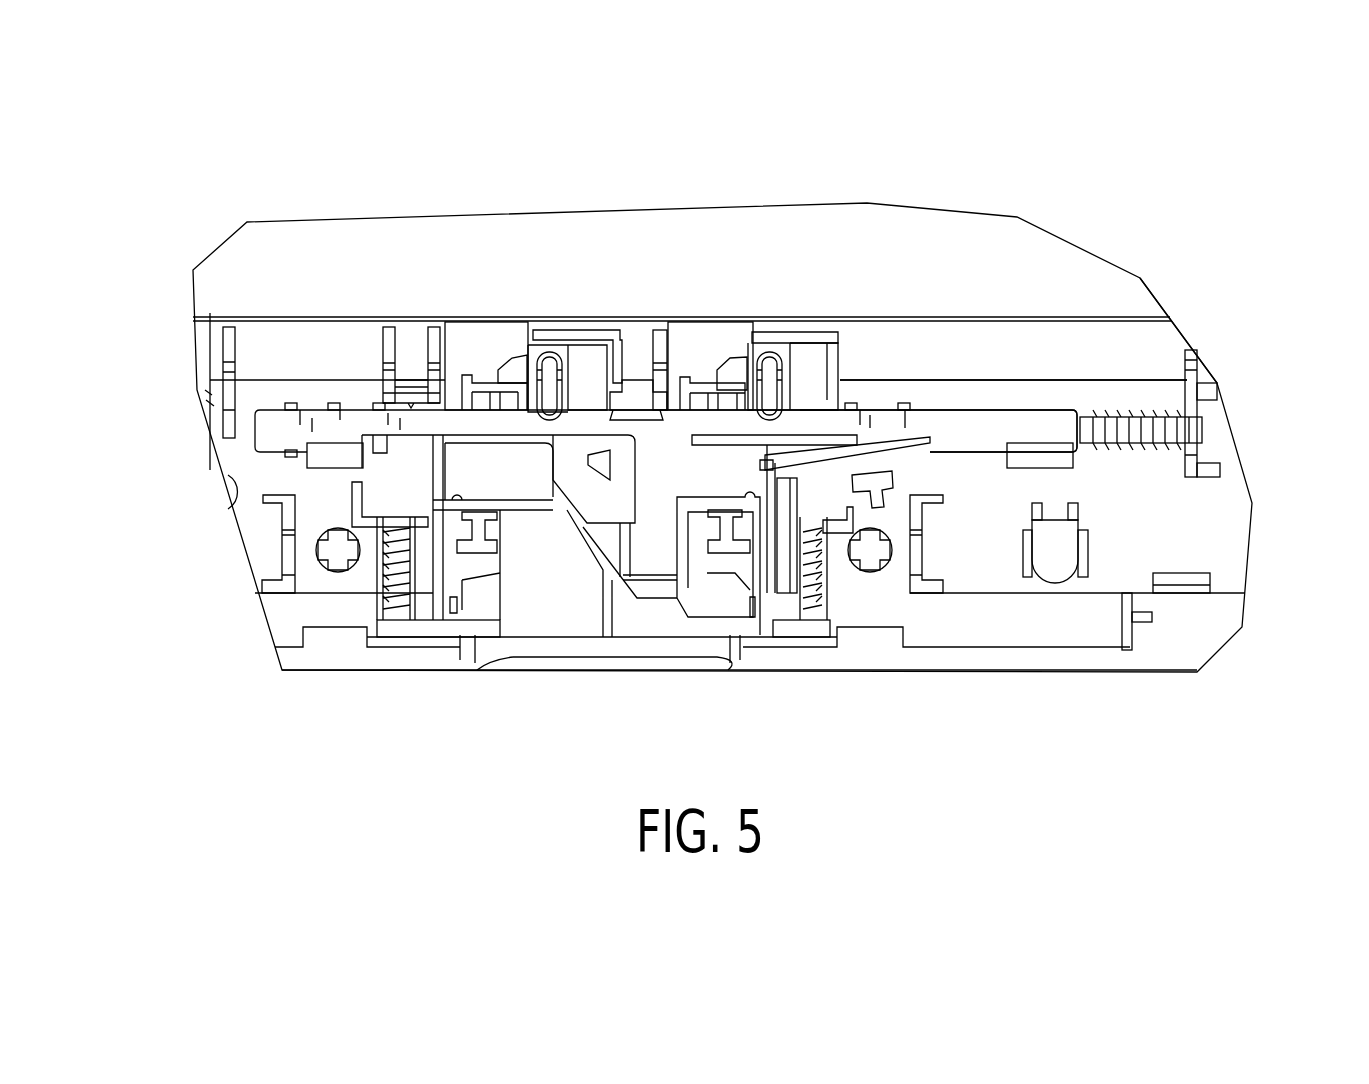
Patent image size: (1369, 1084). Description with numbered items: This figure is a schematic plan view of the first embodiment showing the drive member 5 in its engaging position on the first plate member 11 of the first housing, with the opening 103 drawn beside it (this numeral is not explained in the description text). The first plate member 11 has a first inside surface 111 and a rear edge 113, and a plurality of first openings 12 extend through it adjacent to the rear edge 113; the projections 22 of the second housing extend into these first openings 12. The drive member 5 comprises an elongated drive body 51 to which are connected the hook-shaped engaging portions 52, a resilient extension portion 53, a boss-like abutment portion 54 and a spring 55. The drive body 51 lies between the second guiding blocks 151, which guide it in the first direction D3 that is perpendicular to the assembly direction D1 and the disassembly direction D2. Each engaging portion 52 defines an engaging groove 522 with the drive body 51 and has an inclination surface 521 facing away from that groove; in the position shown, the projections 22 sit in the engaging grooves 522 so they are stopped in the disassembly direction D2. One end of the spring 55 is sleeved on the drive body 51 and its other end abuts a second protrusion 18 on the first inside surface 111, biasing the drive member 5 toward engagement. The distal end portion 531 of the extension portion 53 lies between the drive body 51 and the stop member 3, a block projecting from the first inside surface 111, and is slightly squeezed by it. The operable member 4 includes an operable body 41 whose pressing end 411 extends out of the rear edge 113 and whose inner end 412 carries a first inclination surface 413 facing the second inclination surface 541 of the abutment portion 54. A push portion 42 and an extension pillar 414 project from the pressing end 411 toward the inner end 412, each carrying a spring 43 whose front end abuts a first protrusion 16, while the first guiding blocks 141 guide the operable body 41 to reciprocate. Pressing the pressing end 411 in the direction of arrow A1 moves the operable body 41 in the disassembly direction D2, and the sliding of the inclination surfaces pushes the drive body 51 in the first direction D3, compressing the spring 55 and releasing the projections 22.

The first plate member 11 is at (1052, 250).
The first inside surface 111 is at (1122, 295).
The rear edge 113 is at (903, 672).
The opening 103 is at (973, 352).
The first openings 12 is at (478, 338).
The projections 22 is at (467, 388).
The inclination surface 521 is at (510, 362).
The engaging groove 522 is at (525, 385).
The engaging portions 52 is at (535, 368).
The second guiding blocks 151 is at (637, 403).
The drive member 5 is at (1022, 402).
The drive body 51 is at (1058, 420).
The spring 55 is at (1122, 430).
The second protrusion 18 is at (1192, 455).
The abutment portion 54 is at (625, 470).
The extension portion 53 is at (885, 455).
The distal end portion 531 is at (760, 463).
The inner end 412 is at (510, 505).
The second inclination surface 541 is at (572, 505).
The first inclination surface 413 is at (634, 555).
The operable member 4 is at (516, 691).
The operable body 41 is at (474, 682).
The pressing end 411 is at (545, 662).
The arrow A1 is at (587, 684).
The first guiding blocks 141 is at (483, 545).
The first protrusions 16 is at (355, 502).
The springs 43 is at (395, 540).
The extension pillar 414 is at (388, 597).
The push portion 42 is at (817, 585).
The stop member 3 is at (787, 517).
The assembly direction D1 is at (121, 180).
The disassembly direction D2 is at (153, 190).
The first direction D3 is at (1235, 353).